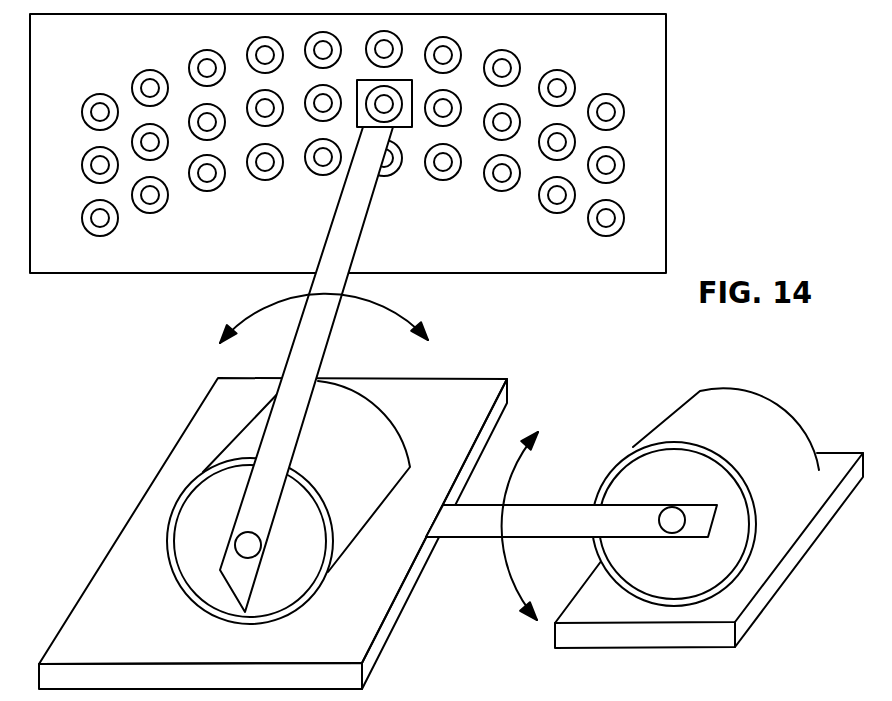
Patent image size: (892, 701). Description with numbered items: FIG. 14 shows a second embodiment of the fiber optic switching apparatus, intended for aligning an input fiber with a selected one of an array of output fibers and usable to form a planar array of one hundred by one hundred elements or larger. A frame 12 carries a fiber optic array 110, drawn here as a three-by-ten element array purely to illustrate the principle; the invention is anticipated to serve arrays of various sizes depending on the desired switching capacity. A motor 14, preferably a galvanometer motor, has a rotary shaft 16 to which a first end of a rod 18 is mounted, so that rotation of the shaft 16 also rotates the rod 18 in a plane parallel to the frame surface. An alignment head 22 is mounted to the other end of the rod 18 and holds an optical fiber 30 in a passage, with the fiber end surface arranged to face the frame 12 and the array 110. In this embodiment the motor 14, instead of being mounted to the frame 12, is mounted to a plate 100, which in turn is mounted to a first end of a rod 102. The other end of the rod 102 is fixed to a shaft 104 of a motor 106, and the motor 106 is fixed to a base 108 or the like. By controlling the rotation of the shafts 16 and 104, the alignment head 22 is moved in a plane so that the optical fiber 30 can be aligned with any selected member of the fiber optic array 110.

The frame 12 is at (667, 180).
The fiber optic array 110 is at (646, 115).
The alignment head 22 is at (392, 128).
The optical fiber 30 is at (382, 127).
The rod 18 is at (324, 356).
The motor 14 is at (398, 441).
The shaft 16 is at (240, 529).
The plate 100 is at (108, 576).
The rod 102 is at (553, 503).
The shaft 104 is at (673, 530).
The motor 106 is at (671, 416).
The base 108 is at (762, 591).